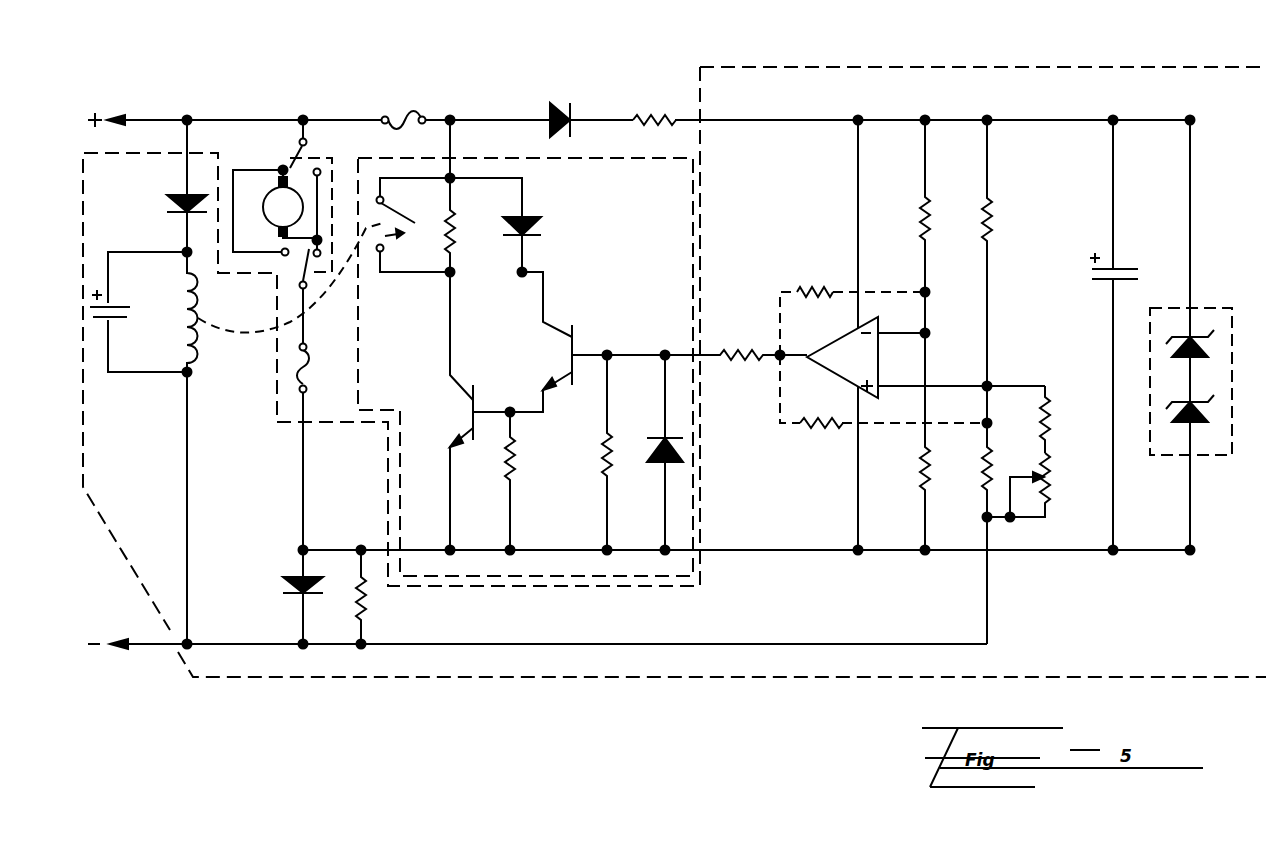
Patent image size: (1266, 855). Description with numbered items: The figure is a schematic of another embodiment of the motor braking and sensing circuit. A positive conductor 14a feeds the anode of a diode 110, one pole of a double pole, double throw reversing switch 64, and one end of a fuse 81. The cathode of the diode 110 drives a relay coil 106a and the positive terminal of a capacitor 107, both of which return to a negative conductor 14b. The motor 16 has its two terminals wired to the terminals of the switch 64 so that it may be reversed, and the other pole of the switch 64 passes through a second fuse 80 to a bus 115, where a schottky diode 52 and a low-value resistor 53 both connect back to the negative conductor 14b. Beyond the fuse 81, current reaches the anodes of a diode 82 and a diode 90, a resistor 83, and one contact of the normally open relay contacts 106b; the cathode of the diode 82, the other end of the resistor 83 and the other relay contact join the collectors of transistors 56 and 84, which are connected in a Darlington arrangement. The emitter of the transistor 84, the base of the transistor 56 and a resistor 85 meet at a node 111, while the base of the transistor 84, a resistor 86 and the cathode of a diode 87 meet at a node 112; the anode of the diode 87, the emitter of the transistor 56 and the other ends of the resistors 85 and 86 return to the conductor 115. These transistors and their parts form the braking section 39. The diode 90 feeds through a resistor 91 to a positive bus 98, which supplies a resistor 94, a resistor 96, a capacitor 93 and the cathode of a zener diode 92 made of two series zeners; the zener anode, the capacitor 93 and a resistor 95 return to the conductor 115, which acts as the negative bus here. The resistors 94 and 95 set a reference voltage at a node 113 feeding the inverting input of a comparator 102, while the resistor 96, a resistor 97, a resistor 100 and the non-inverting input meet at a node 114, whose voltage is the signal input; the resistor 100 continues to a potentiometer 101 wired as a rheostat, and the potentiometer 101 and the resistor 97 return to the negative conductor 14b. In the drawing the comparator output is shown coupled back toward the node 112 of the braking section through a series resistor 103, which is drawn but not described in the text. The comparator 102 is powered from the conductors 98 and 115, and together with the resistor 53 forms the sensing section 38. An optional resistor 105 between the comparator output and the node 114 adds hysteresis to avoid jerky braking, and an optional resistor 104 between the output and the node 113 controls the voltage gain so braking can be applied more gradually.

The positive conductor 14a is at (131, 118).
The negative conductor 14b is at (145, 648).
The motor 16 is at (268, 206).
The sensing section 38 is at (440, 677).
The braking section 39 is at (527, 153).
The schottky diode 52 is at (283, 585).
The resistor 53 is at (372, 606).
The transistor 56 is at (465, 412).
The reversing switch 64 is at (290, 163).
The fuse 80 is at (312, 372).
The fuse 81 is at (396, 113).
The diode 82 is at (542, 223).
The resistor 83 is at (453, 243).
The transistor 84 is at (570, 358).
The resistor 85 is at (505, 470).
The resistor 86 is at (597, 468).
The diode 87 is at (650, 460).
The diode 90 is at (548, 113).
The resistor 91 is at (647, 132).
The zener diode 92 is at (1207, 307).
The capacitor 93 is at (1093, 280).
The resistor 94 is at (929, 220).
The resistor 95 is at (922, 470).
The resistor 96 is at (993, 220).
The resistor 97 is at (980, 470).
The positive bus 98 is at (757, 120).
The resistor 100 is at (1053, 417).
The potentiometer 101 is at (1052, 470).
The comparator 102 is at (845, 332).
The resistor 103 is at (752, 362).
The resistor 104 is at (829, 292).
The resistor 105 is at (825, 427).
The relay coil 106a is at (198, 335).
The relay contacts 106b is at (416, 198).
The capacitor 107 is at (117, 318).
The diode 110 is at (170, 205).
The node 111 is at (512, 410).
The node 112 is at (618, 346).
The node 113 is at (928, 333).
The node 114 is at (987, 383).
The bus 115 is at (372, 545).